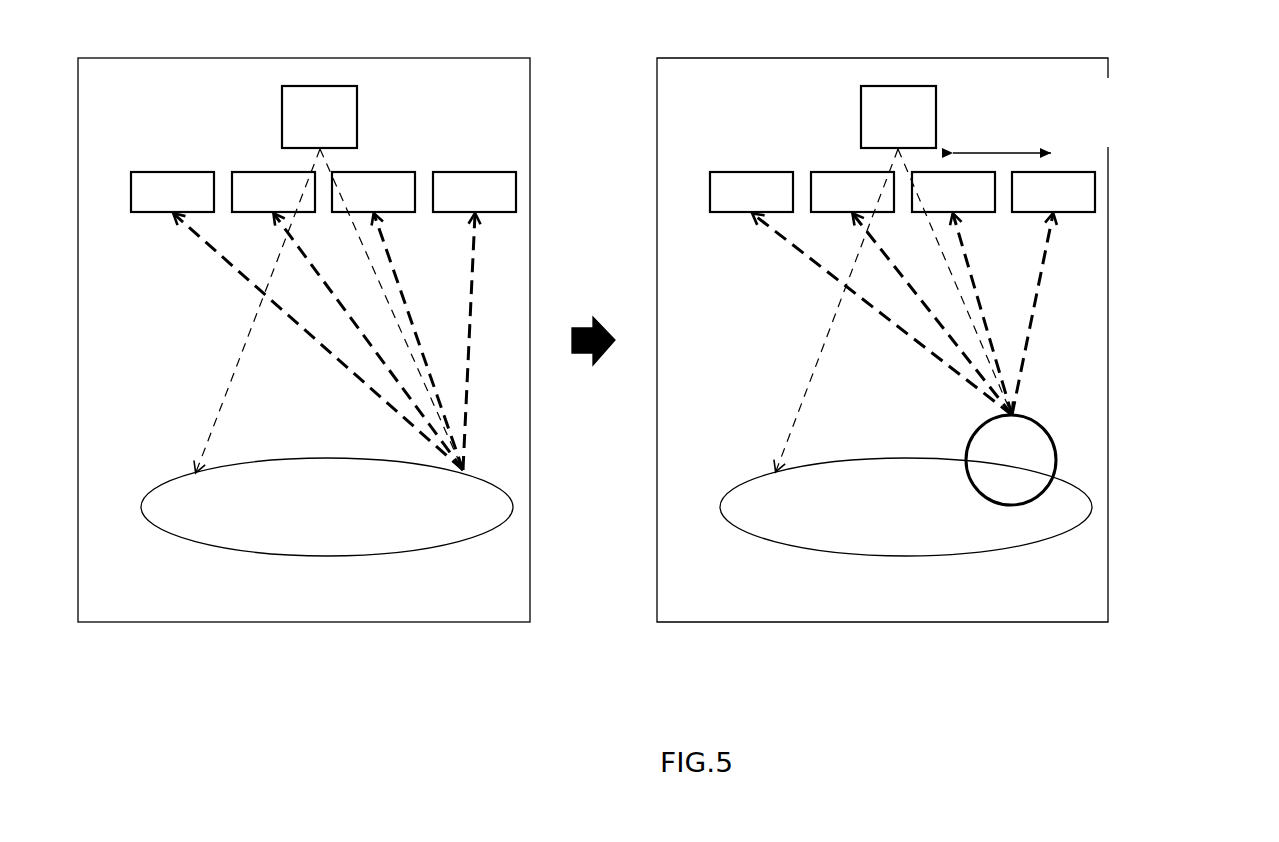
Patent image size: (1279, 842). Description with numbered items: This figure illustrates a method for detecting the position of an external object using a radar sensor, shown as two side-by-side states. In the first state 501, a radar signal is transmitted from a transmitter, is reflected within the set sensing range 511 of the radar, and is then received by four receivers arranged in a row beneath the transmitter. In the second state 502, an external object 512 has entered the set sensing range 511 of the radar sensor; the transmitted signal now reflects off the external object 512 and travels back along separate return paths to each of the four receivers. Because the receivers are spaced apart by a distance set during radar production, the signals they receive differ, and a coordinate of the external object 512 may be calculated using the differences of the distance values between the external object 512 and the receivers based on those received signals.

The radar signal transmission and reception state 501 is at (304, 321).
The external object entry state 502 is at (959, 321).
The set sensing range 511 is at (198, 527).
The external object 512 is at (967, 441).